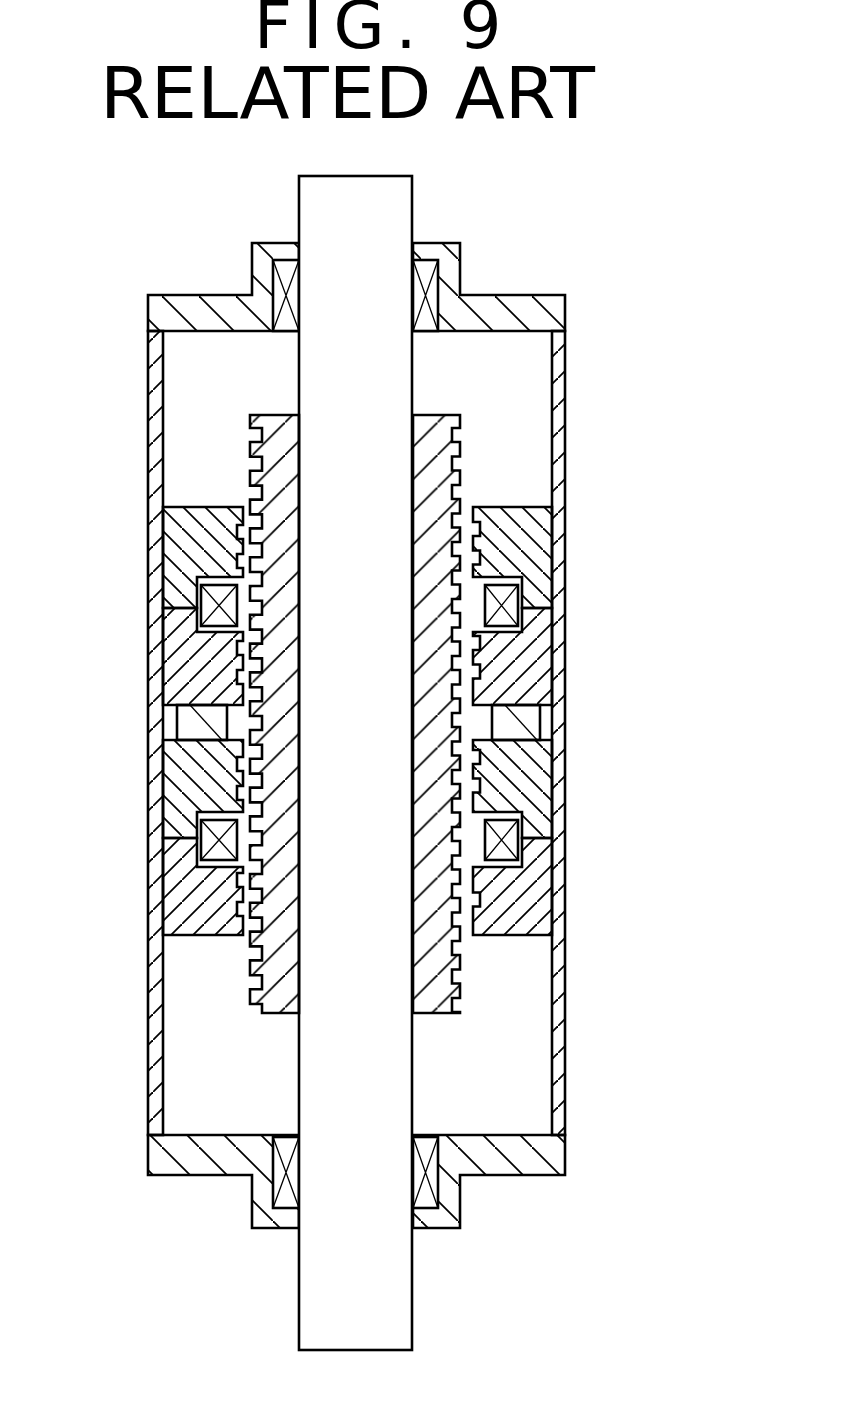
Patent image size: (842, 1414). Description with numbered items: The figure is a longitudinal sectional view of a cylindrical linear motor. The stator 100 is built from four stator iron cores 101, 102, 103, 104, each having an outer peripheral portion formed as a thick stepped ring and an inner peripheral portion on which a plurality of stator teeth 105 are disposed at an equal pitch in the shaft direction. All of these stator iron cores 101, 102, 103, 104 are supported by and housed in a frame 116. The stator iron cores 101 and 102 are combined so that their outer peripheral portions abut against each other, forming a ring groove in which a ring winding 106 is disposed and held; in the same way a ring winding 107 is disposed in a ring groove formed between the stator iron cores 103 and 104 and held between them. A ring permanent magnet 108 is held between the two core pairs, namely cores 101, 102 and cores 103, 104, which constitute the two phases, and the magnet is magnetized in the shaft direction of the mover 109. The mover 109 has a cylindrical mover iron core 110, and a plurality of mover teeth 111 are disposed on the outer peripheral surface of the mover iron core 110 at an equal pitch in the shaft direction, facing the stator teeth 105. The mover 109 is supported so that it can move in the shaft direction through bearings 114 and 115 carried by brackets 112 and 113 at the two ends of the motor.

The stator 100 is at (371, 762).
The stator iron core 101 is at (537, 557).
The stator iron core 102 is at (540, 683).
The stator iron core 103 is at (535, 800).
The stator iron core 104 is at (540, 903).
The stator teeth 105 is at (492, 504).
The ring winding 106 is at (200, 600).
The ring winding 107 is at (200, 853).
The ring permanent magnet 108 is at (188, 725).
The mover 109 is at (428, 1015).
The mover iron core 110 is at (432, 985).
The mover teeth 111 is at (252, 982).
The bracket 112 is at (527, 308).
The bracket 113 is at (527, 1162).
The bearing 114 is at (427, 272).
The bearing 115 is at (425, 1197).
The frame 116 is at (565, 377).